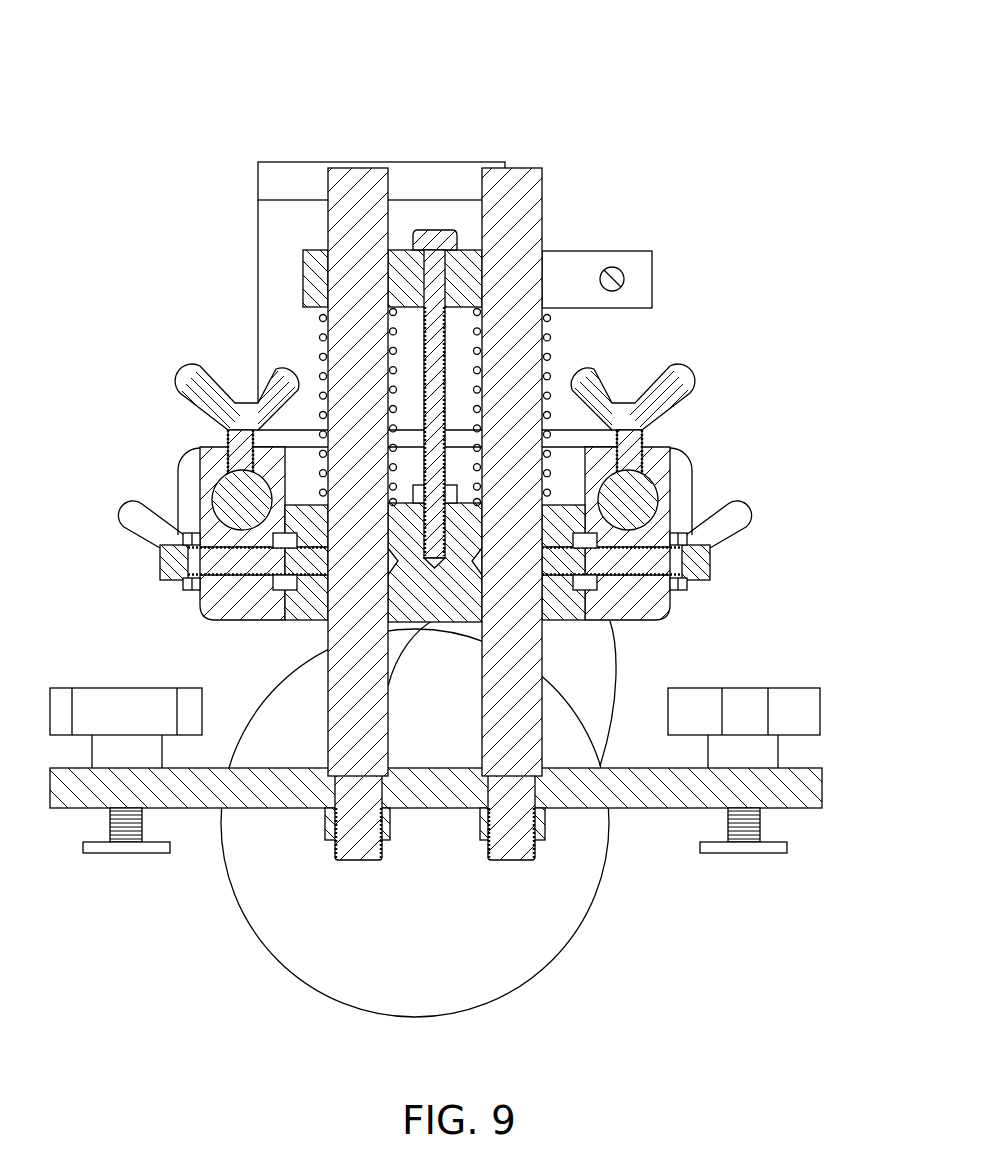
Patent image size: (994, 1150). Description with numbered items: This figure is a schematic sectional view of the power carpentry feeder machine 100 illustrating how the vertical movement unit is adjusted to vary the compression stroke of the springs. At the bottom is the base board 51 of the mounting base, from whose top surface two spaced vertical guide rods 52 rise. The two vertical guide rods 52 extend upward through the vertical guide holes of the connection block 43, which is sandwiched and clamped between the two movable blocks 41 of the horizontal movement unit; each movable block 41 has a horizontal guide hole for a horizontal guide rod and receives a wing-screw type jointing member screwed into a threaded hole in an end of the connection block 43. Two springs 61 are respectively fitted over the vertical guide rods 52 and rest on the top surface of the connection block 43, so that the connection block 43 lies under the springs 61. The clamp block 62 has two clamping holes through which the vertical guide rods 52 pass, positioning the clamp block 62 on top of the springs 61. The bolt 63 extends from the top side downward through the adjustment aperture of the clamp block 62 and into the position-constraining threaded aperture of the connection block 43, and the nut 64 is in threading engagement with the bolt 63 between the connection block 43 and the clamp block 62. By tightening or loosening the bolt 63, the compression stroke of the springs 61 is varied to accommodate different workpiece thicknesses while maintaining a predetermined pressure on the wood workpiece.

The power carpentry feeder machine 100 is at (725, 76).
The movable block 41 is at (210, 607).
The connection block 43 is at (388, 682).
The base board 51 is at (665, 806).
The vertical guide rod 52 is at (337, 224).
The spring 61 is at (322, 336).
The clamp block 62 is at (645, 282).
The bolt 63 is at (436, 233).
The nut 64 is at (420, 493).